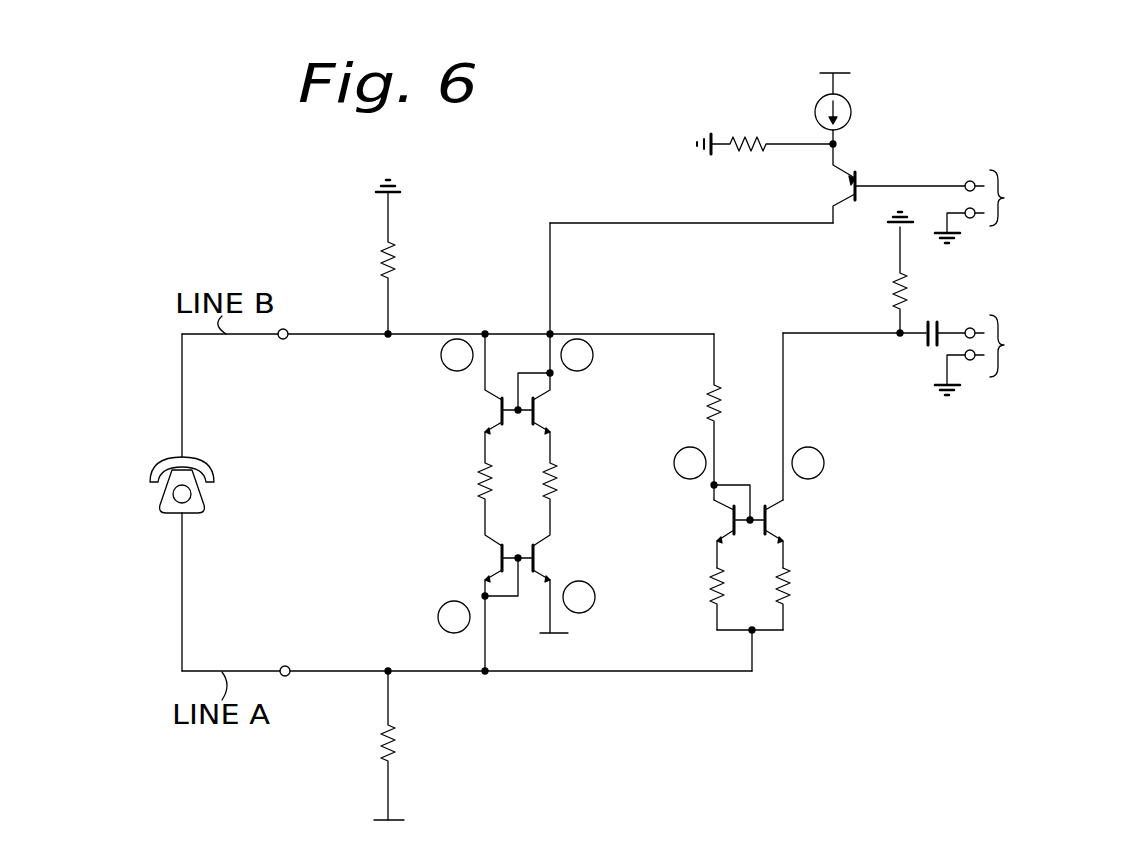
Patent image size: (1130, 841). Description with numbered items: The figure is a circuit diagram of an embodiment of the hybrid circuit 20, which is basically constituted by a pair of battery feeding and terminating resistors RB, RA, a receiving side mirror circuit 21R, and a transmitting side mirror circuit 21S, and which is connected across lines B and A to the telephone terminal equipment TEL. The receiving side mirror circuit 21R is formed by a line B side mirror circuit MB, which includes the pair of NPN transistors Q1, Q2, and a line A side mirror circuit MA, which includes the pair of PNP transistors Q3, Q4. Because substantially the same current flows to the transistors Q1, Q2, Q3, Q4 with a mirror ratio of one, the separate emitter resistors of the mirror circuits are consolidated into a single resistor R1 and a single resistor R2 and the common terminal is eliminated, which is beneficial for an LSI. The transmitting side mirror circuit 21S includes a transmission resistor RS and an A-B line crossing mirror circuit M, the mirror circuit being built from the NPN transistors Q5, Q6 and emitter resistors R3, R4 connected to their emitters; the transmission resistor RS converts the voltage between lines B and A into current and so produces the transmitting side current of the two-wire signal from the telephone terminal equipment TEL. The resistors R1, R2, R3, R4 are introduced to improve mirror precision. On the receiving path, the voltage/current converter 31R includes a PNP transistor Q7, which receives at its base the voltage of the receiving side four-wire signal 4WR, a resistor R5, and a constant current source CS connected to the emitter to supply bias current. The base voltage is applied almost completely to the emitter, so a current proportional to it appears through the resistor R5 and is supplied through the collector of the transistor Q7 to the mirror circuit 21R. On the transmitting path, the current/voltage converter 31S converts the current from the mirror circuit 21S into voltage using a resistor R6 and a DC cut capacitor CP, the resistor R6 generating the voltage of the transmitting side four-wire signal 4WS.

The hybrid circuit 20 is at (483, 276).
The receiving side mirror circuit 21R is at (397, 518).
The transmitting side mirror circuit 21S is at (775, 467).
The voltage/current converter 31R is at (783, 103).
The current/voltage converter 31S is at (987, 313).
The receiving side four-wire signal 4WR is at (1016, 199).
The transmitting side four-wire signal 4WS is at (1120, 337).
The telephone terminal equipment TEL is at (150, 505).
The battery feeding and terminating resistor RB is at (380, 248).
The battery feeding and terminating resistor RA is at (380, 742).
The NPN transistor Q1 is at (492, 410).
The NPN transistor Q2 is at (548, 408).
The PNP transistor Q3 is at (492, 560).
The PNP transistor Q4 is at (553, 557).
The NPN transistor Q5 is at (726, 522).
The NPN transistor Q6 is at (782, 524).
The PNP transistor Q7 is at (842, 188).
The resistor R1 is at (482, 480).
The resistor R2 is at (558, 488).
The emitter resistor R3 is at (717, 597).
The emitter resistor R4 is at (788, 598).
The resistor R5 is at (742, 135).
The resistor R6 is at (893, 290).
The transmission resistor RS is at (712, 396).
The line A side mirror circuit MA is at (519, 528).
The line B side mirror circuit MB is at (522, 448).
The A-B line crossing mirror circuit M is at (777, 585).
The constant current source CS is at (853, 106).
The DC cut capacitor CP is at (932, 352).